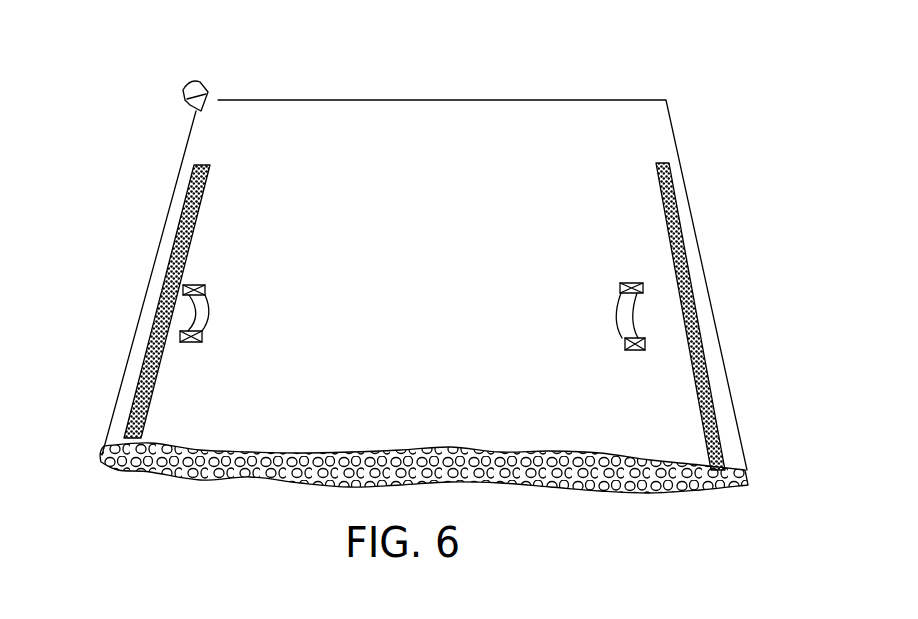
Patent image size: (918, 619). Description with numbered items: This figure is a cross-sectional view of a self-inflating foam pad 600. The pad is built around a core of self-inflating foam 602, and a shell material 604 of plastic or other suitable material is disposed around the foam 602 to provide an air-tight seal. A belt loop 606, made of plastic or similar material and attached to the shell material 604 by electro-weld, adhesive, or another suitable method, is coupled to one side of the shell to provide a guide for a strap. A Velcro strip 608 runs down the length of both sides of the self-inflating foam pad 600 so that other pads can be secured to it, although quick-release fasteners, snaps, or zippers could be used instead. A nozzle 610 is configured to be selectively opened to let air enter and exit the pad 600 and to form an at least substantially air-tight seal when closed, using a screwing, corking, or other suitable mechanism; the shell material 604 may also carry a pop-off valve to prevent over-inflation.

The self-inflating foam pad 600 is at (545, 69).
The self-inflating foam 602 is at (160, 484).
The shell material 604 is at (696, 226).
The belt loop 606 is at (198, 313).
The Velcro strip 608 is at (188, 210).
The nozzle 610 is at (200, 80).